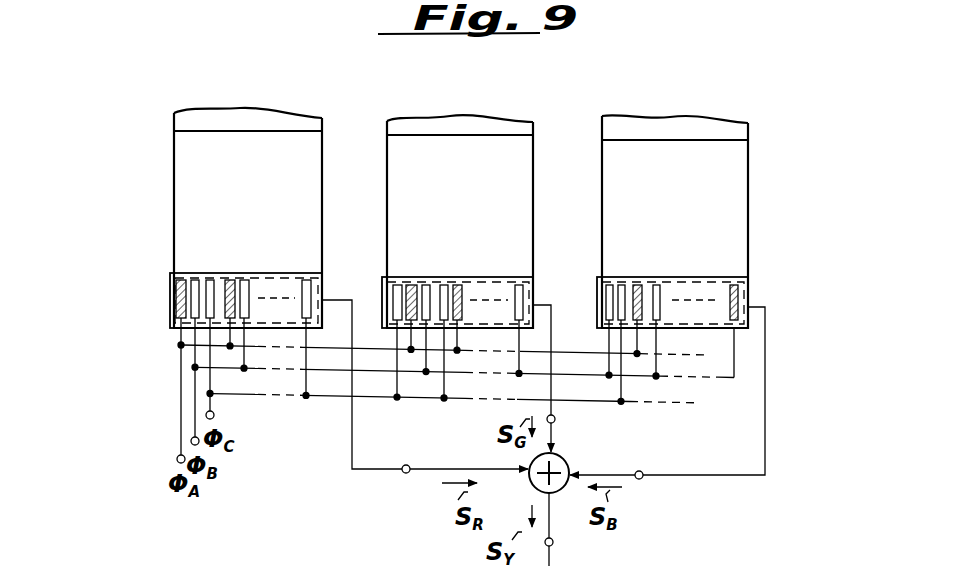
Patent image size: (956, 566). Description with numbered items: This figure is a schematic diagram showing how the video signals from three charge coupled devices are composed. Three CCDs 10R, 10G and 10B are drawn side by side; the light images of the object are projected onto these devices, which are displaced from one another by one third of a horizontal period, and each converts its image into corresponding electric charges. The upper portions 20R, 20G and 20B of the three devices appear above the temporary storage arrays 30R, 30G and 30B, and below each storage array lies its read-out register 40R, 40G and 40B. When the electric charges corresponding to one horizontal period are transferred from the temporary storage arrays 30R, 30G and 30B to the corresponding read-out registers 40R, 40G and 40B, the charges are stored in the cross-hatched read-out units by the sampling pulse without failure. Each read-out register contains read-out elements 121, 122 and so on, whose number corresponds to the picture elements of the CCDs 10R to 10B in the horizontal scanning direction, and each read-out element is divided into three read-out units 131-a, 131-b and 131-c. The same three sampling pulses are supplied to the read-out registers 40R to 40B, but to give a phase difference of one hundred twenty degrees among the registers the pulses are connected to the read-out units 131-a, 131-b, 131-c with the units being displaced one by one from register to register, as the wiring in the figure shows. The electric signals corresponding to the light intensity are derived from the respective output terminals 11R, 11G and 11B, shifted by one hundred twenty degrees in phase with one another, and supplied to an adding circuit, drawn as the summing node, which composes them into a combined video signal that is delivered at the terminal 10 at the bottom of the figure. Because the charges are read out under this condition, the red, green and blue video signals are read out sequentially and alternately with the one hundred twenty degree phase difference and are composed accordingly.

The CCD 10R is at (258, 78).
The CCD 10G is at (484, 78).
The CCD 10B is at (699, 78).
The red tube faceplate section 20R is at (301, 120).
The green tube faceplate section 20G is at (523, 120).
The blue tube faceplate section 20B is at (743, 120).
The temporary storage array 30R is at (248, 220).
The temporary storage array 30G is at (460, 224).
The temporary storage array 30B is at (675, 222).
The read-out register 40R is at (169, 306).
The read-out register 40G is at (376, 303).
The read-out register 40B is at (591, 303).
The read-out unit 131-b is at (196, 280).
The read-out unit 131-a is at (184, 321).
The read-out unit 131-c is at (198, 340).
The read-out element 121 is at (212, 279).
The read-out element 122 is at (252, 279).
The output terminal 11R is at (406, 479).
The output terminal 11G is at (558, 420).
The output terminal 11B is at (640, 481).
The luminance signal output terminal 10 is at (551, 542).